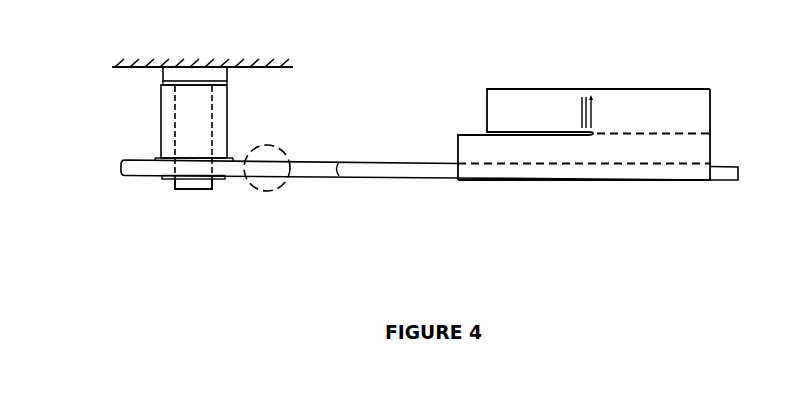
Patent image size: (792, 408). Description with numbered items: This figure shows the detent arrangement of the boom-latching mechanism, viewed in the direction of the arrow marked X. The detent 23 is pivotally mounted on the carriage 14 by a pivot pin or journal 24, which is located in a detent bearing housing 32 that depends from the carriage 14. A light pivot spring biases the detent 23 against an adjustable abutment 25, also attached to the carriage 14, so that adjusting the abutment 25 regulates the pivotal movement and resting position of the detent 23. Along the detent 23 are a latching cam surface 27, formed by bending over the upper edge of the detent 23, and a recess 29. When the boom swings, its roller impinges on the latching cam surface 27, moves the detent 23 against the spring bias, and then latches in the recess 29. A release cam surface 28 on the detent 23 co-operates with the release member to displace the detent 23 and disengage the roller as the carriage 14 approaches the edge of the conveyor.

The carriage 14 is at (145, 50).
The detent 23 is at (493, 181).
The pivot pin or journal 24 is at (193, 190).
The adjustable abutment 25 is at (260, 190).
The latching cam surface 27 is at (687, 153).
The release cam surface 28 is at (537, 107).
The recess 29 is at (389, 172).
The detent bearing housing 32 is at (168, 137).